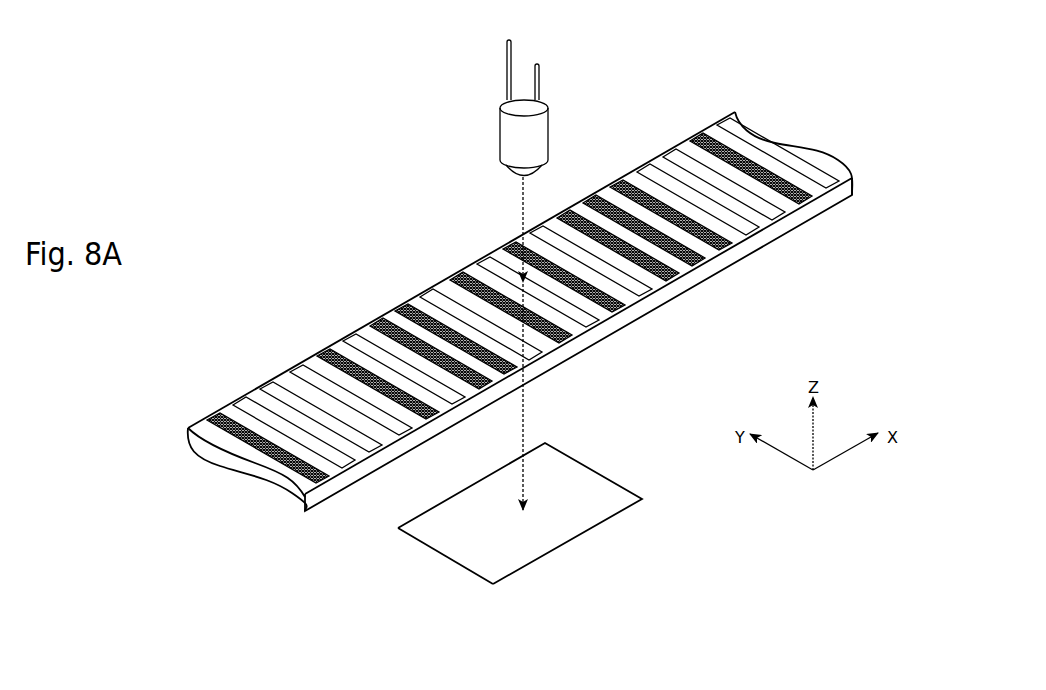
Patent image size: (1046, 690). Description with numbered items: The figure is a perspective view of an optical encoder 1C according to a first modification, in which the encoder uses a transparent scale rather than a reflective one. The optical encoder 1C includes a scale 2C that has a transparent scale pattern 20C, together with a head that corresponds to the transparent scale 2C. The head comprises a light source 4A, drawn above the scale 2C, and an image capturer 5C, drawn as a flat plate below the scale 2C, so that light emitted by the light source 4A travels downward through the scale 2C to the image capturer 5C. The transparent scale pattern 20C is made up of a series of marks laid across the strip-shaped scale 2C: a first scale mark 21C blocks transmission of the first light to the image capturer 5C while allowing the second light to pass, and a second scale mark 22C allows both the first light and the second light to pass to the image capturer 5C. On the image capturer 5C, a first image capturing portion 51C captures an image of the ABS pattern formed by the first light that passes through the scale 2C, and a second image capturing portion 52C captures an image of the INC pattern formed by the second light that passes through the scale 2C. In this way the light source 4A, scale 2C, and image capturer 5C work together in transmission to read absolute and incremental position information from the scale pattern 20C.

The optical encoder 1C is at (680, 87).
The scale 2C is at (826, 222).
The transparent scale pattern 20C is at (377, 320).
The first scale mark 21C is at (700, 266).
The second scale mark 22C is at (276, 370).
The light source 4A is at (499, 133).
The image capturer 5C is at (433, 553).
The first image capturing portion 51C is at (500, 568).
The second image capturing portion 52C is at (592, 515).